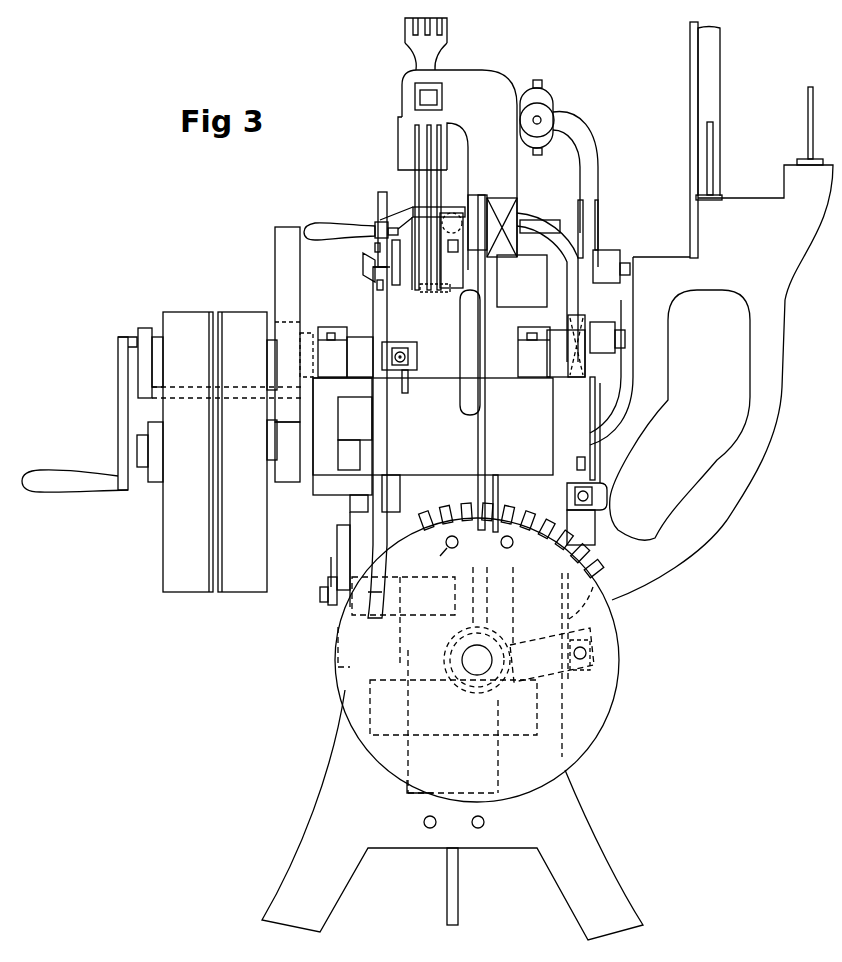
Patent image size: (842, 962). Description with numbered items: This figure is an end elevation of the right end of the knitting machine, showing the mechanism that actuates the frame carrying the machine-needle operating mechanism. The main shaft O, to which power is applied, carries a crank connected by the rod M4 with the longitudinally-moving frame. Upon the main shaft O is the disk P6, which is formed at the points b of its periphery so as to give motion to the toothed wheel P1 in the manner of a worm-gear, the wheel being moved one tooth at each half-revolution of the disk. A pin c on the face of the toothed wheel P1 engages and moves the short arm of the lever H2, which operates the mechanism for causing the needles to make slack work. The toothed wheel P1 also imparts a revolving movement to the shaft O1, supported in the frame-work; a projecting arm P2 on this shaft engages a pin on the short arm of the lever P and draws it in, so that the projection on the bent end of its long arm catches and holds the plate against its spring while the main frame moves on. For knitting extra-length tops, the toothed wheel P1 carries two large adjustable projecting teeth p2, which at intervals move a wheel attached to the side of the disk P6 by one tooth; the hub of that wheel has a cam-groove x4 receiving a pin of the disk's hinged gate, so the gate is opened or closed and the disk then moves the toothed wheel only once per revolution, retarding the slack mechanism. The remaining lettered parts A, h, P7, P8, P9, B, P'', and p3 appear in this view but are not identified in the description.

The frame A is at (547, 481).
The hand lever h is at (330, 224).
The lever H2 is at (379, 405).
The plate P7 is at (287, 324).
The block P8 is at (287, 452).
The main shaft O is at (135, 342).
The crank handle P9 is at (75, 489).
The bed B is at (433, 433).
The disk P6 is at (480, 373).
The guide P'' is at (479, 214).
The cam-groove x4 is at (508, 199).
The points of the periphery b is at (468, 167).
The rod M4 is at (607, 331).
The lever P is at (587, 514).
The pawl p3 is at (543, 529).
The adjustable projecting teeth p2 is at (583, 548).
The pin c is at (474, 546).
The toothed wheel P1 is at (477, 652).
The shaft O1 is at (477, 660).
The projecting arm P2 is at (552, 634).